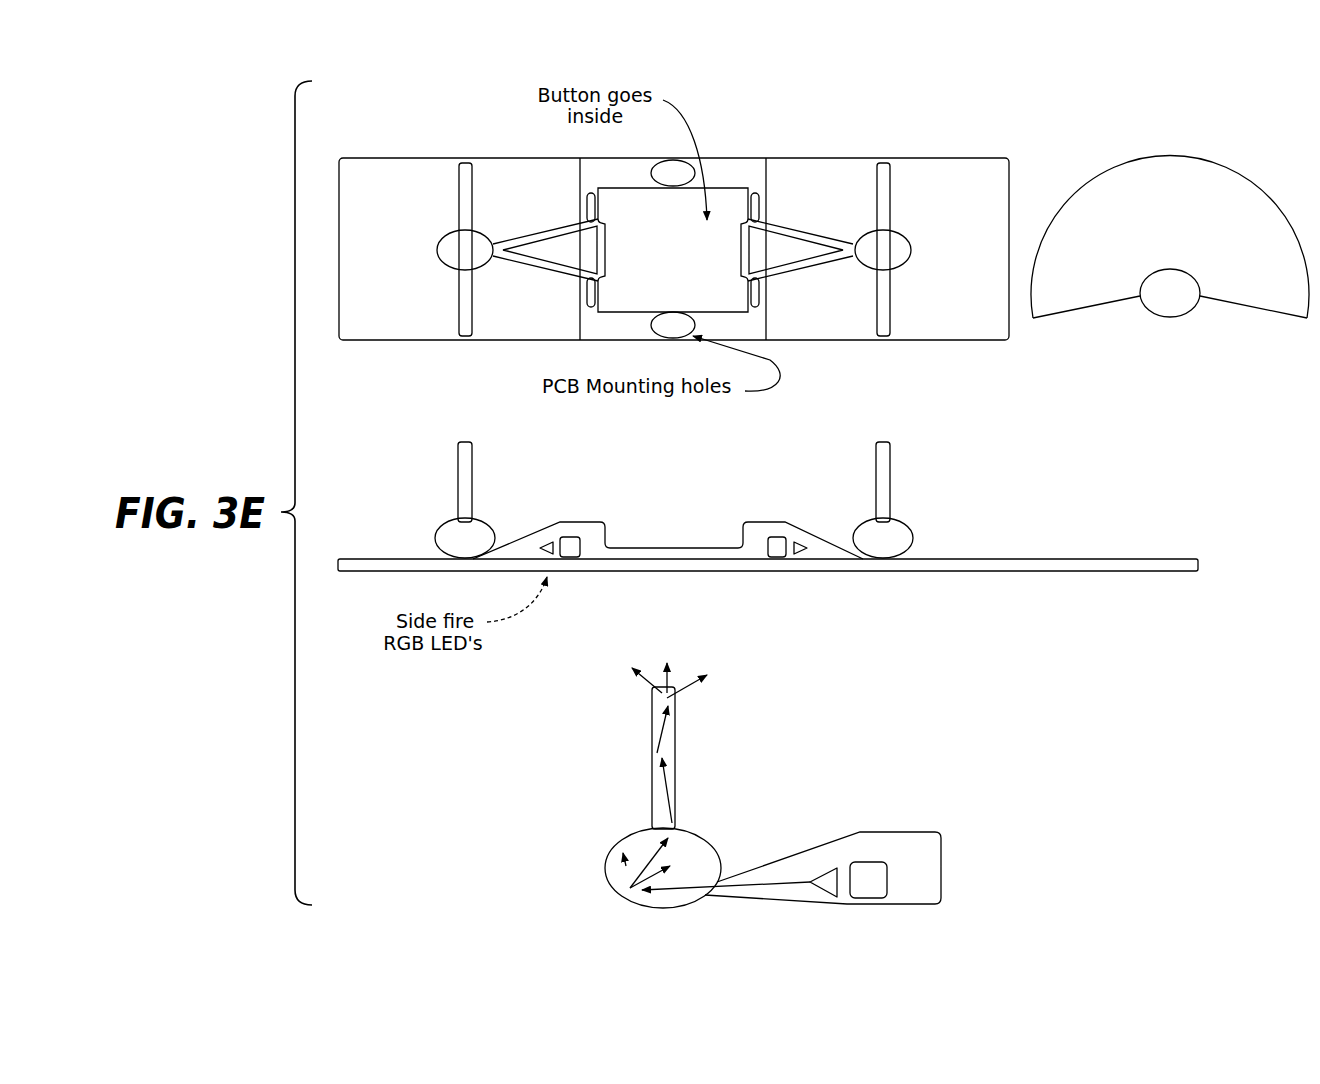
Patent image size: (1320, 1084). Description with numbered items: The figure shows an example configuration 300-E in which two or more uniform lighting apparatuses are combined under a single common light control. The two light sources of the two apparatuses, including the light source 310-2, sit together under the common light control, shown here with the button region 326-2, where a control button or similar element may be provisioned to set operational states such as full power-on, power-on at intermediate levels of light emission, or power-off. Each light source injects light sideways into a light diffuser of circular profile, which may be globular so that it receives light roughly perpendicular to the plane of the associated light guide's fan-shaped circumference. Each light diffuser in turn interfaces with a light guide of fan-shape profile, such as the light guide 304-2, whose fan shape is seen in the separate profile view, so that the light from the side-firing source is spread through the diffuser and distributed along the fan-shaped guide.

The example configuration 300-E is at (824, 303).
The housing / PCB frame 326-2 is at (760, 138).
The light guide 304-2 is at (923, 322).
The light source 310-2 is at (770, 507).